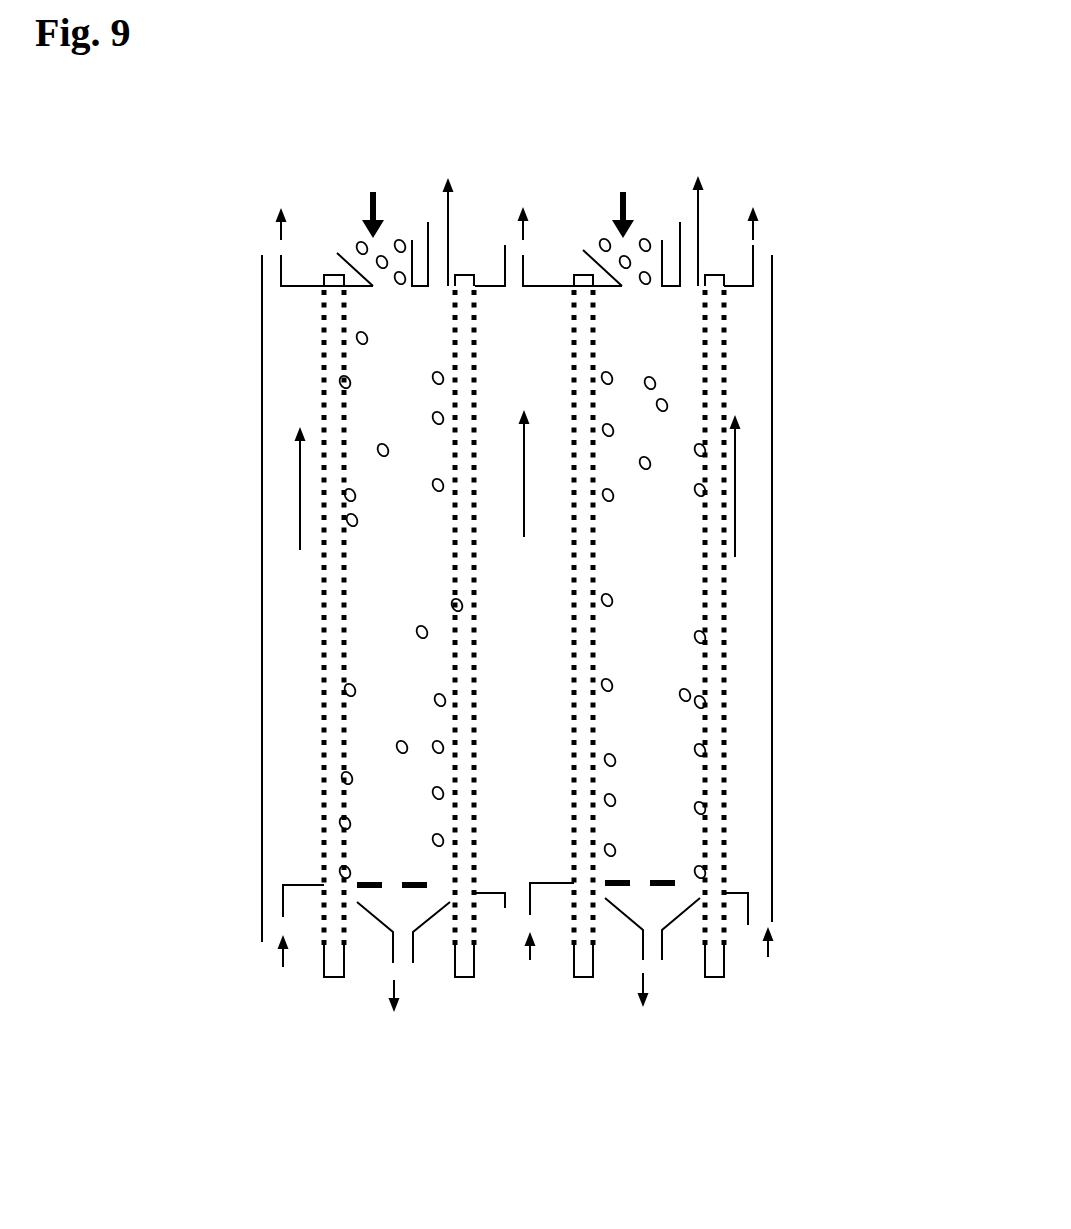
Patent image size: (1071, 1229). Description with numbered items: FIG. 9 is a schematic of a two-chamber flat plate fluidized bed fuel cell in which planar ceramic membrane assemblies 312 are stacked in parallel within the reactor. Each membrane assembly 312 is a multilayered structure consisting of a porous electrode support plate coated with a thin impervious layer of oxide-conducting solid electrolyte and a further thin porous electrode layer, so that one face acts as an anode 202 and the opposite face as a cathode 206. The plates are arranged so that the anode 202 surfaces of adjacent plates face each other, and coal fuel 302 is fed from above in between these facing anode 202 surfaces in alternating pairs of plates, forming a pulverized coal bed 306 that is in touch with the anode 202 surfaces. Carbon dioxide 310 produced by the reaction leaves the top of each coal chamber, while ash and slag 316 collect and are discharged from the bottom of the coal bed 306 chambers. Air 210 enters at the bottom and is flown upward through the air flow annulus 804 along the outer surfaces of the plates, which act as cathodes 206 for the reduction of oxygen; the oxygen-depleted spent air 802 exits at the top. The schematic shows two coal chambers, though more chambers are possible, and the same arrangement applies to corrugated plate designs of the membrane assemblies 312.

The anode 202 is at (362, 556).
The cathode 206 is at (812, 753).
The air 210 is at (538, 709).
The coal fuel 302 is at (505, 194).
The coal bed 306 is at (381, 787).
The CO2 310 is at (556, 196).
The membrane assembly 312 is at (331, 995).
The ash and slag 316 is at (527, 970).
The spent air 802 is at (506, 212).
The air flow annulus 804 is at (790, 517).